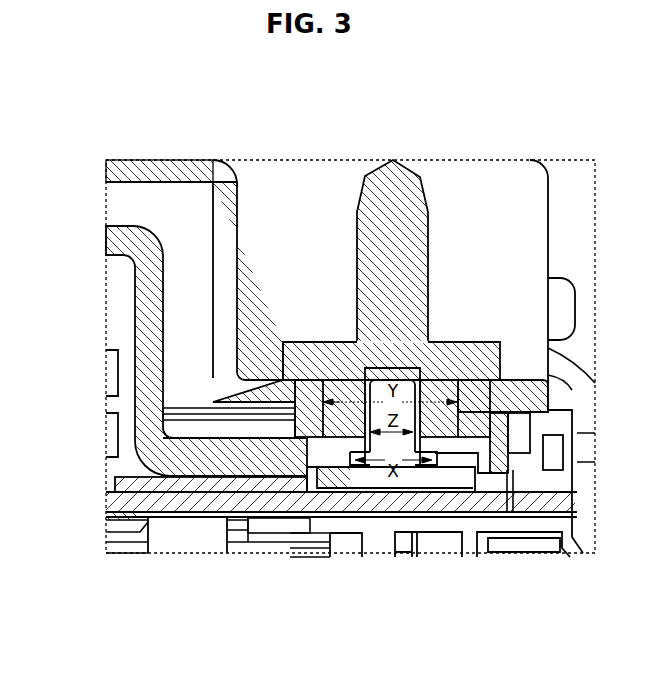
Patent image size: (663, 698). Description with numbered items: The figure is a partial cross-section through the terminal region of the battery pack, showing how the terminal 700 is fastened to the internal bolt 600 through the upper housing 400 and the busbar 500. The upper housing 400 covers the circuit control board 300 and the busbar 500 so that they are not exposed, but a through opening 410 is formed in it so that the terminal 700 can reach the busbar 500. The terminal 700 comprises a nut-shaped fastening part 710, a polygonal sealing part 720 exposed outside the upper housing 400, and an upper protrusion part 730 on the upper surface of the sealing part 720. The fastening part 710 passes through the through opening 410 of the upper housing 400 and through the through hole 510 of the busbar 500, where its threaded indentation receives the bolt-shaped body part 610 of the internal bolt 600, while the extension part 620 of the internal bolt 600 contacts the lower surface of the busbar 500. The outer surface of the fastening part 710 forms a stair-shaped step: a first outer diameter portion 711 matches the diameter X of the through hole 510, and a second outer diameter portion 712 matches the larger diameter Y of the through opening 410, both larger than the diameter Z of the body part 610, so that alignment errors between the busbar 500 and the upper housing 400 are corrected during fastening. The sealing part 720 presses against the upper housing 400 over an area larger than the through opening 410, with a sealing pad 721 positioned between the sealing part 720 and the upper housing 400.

The circuit control board 300 is at (305, 500).
The upper housing 400 is at (240, 388).
The through opening 410 is at (317, 337).
The busbar 500 is at (135, 437).
The through hole 510 is at (425, 430).
The internal bolt 600 is at (48, 470).
The body part 610 is at (106, 492).
The extension part 620 is at (106, 548).
The terminal 700 is at (423, 180).
The fastening part 710 is at (403, 633).
The first outer diameter portion 711 is at (422, 557).
The second outer diameter portion 712 is at (478, 557).
The sealing part 720 is at (287, 343).
The sealing pad 721 is at (285, 375).
The upper protrusion part 730 is at (357, 210).